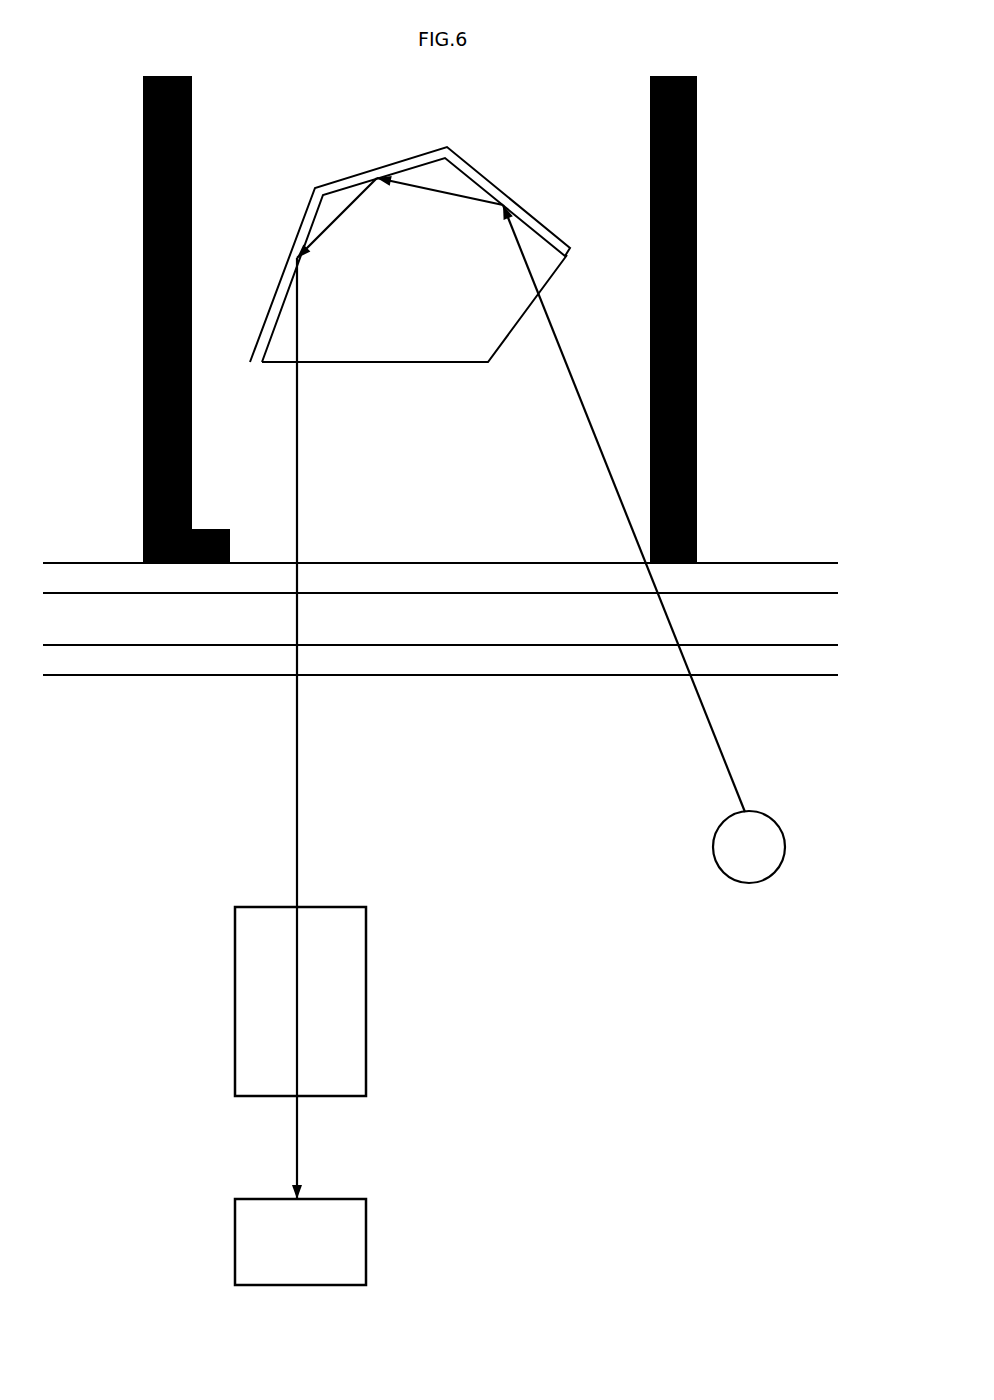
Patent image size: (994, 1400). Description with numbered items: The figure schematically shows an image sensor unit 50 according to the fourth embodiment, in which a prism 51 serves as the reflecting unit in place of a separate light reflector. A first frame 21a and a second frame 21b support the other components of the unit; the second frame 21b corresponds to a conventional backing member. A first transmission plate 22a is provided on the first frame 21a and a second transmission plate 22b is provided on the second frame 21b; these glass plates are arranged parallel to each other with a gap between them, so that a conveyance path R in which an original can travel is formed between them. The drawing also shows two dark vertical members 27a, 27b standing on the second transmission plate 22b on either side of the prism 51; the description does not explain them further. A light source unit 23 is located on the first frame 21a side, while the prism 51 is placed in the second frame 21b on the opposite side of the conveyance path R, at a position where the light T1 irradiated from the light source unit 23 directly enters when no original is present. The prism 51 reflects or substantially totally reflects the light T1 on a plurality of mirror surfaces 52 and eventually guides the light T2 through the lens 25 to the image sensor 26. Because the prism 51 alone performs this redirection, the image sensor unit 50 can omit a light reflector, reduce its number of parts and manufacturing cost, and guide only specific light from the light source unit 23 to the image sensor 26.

The image sensor unit 50 is at (800, 95).
The left light shielding wall 27a is at (143, 196).
The right light shielding wall 27b is at (697, 196).
The first frame 21a is at (108, 867).
The second frame 21b is at (107, 332).
The first transmission plate 22a is at (107, 662).
The second transmission plate 22b is at (88, 574).
The conveyance path R is at (748, 612).
The prism 51 is at (427, 335).
The mirror surfaces 52 is at (484, 181).
The light T1 is at (720, 748).
The light T2 is at (298, 780).
The light source unit 23 is at (785, 847).
The lens 25 is at (366, 1000).
The image sensor 26 is at (366, 1240).